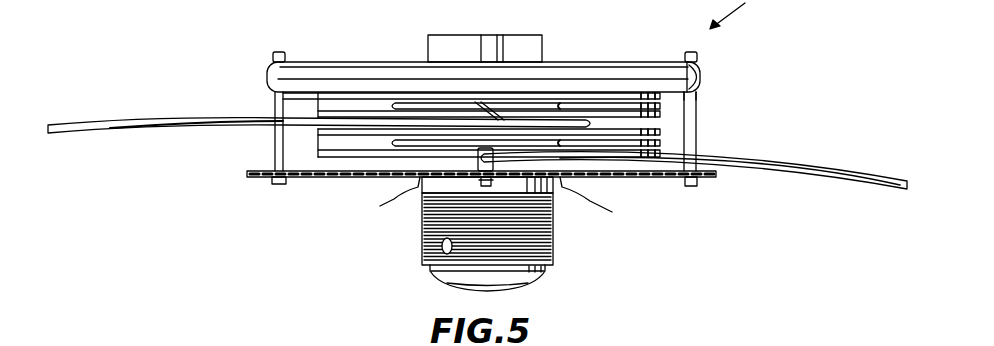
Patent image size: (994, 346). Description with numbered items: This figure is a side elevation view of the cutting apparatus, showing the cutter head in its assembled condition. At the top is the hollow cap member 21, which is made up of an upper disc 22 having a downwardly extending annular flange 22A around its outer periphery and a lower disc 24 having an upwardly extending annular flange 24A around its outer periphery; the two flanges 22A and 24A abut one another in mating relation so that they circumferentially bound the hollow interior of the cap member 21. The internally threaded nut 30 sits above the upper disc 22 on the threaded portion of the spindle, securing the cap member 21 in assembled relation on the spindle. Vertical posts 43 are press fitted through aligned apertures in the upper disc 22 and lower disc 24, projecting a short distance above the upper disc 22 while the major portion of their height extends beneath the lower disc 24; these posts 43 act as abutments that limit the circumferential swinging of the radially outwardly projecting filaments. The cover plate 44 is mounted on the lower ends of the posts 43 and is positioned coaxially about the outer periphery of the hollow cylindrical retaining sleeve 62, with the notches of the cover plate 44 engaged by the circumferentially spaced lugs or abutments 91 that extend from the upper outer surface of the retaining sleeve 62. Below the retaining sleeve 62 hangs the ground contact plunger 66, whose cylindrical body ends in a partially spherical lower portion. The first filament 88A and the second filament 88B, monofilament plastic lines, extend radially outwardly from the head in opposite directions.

The hollow cap member 21 is at (312, 60).
The upper disc 22 is at (625, 62).
The downwardly extending annular flange 22A is at (706, 72).
The lower disc 24 is at (703, 97).
The upwardly extending annular flange 24A is at (707, 88).
The internally threaded nut 30 is at (528, 45).
The post 43 is at (262, 150).
The cover plate 44 is at (718, 176).
The retaining sleeve 62 is at (556, 233).
The ground contact plunger 66 is at (540, 284).
The first filament 88A is at (113, 118).
The second filament 88B is at (835, 166).
The lugs or abutments 91 is at (412, 186).